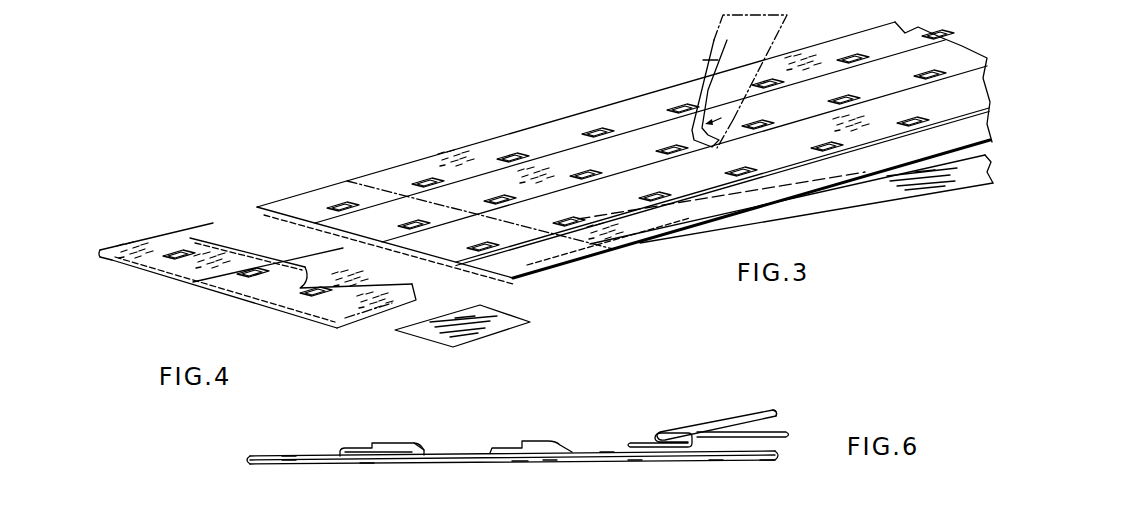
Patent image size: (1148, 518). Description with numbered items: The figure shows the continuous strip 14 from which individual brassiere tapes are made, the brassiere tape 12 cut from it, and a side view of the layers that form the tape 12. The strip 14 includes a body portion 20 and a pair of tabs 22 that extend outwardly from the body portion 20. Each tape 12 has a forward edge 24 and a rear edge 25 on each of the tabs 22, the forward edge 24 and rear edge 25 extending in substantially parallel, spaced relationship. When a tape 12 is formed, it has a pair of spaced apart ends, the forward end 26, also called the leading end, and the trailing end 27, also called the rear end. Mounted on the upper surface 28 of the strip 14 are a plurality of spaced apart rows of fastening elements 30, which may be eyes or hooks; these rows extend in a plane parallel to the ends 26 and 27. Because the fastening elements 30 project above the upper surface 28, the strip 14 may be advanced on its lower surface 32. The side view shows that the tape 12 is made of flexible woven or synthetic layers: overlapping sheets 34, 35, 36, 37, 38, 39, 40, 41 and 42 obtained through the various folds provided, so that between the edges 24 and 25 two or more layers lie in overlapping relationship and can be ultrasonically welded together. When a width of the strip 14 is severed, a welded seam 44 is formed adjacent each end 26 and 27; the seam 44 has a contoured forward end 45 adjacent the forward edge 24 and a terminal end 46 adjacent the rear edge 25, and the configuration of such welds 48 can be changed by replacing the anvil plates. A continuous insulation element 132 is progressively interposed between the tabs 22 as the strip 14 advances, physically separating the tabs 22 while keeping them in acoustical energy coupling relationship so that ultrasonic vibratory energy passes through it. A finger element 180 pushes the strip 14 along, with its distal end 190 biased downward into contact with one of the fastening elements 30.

In FIG. 4, the brassiere tape 12 is at (275, 279).
In FIG. 6, the brassiere tape 12 is at (506, 440).
In FIG. 3, the continuous strip 14 is at (624, 163).
In FIG. 4, the body portion 20 is at (228, 262).
In FIG. 6, the body portion 20 is at (540, 460).
In FIG. 4, the tabs 22 is at (380, 313).
In FIG. 6, the tabs 22 is at (747, 431).
In FIG. 3, the forward edge 24 is at (507, 131).
In FIG. 4, the forward edge 24 is at (131, 242).
In FIG. 6, the forward edge 24 is at (249, 465).
In FIG. 3, the rear edge 25 is at (551, 268).
In FIG. 4, the rear edge 25 is at (343, 331).
In FIG. 6, the rear edge 25 is at (775, 411).
In FIG. 4, the forward end 26 is at (306, 274).
In FIG. 4, the trailing end 27 is at (213, 230).
In FIG. 3, the upper surface 28 is at (466, 150).
In FIG. 4, the upper surface 28 is at (141, 258).
In FIG. 3, the fastening elements 30 is at (340, 201).
In FIG. 4, the fastening elements 30 is at (172, 250).
In FIG. 6, the fastening elements 30 is at (512, 427).
In FIG. 6, the lower surface 32 is at (520, 466).
In FIG. 6, the sheet 34 is at (366, 465).
In FIG. 6, the sheet 35 is at (290, 464).
In FIG. 6, the sheet 36 is at (607, 455).
In FIG. 6, the sheet 37 is at (289, 454).
In FIG. 6, the sheet 38 is at (411, 447).
In FIG. 6, the sheet 39 is at (450, 452).
In FIG. 6, the sheet 40 is at (573, 444).
In FIG. 6, the sheet 41 is at (788, 433).
In FIG. 6, the sheet 42 is at (683, 423).
In FIG. 6, the welded seam 44 is at (635, 489).
In FIG. 4, the forward end of seam 45 is at (100, 262).
In FIG. 6, the terminal end 46 is at (795, 489).
In FIG. 6, the welds 48 is at (633, 489).
In FIG. 3, the insulation element 132 is at (858, 198).
In FIG. 4, the insulation element 132 is at (506, 337).
In FIG. 6, the insulation element 132 is at (785, 440).
In FIG. 3, the finger element 180 is at (717, 87).
In FIG. 3, the distal end 190 is at (714, 146).